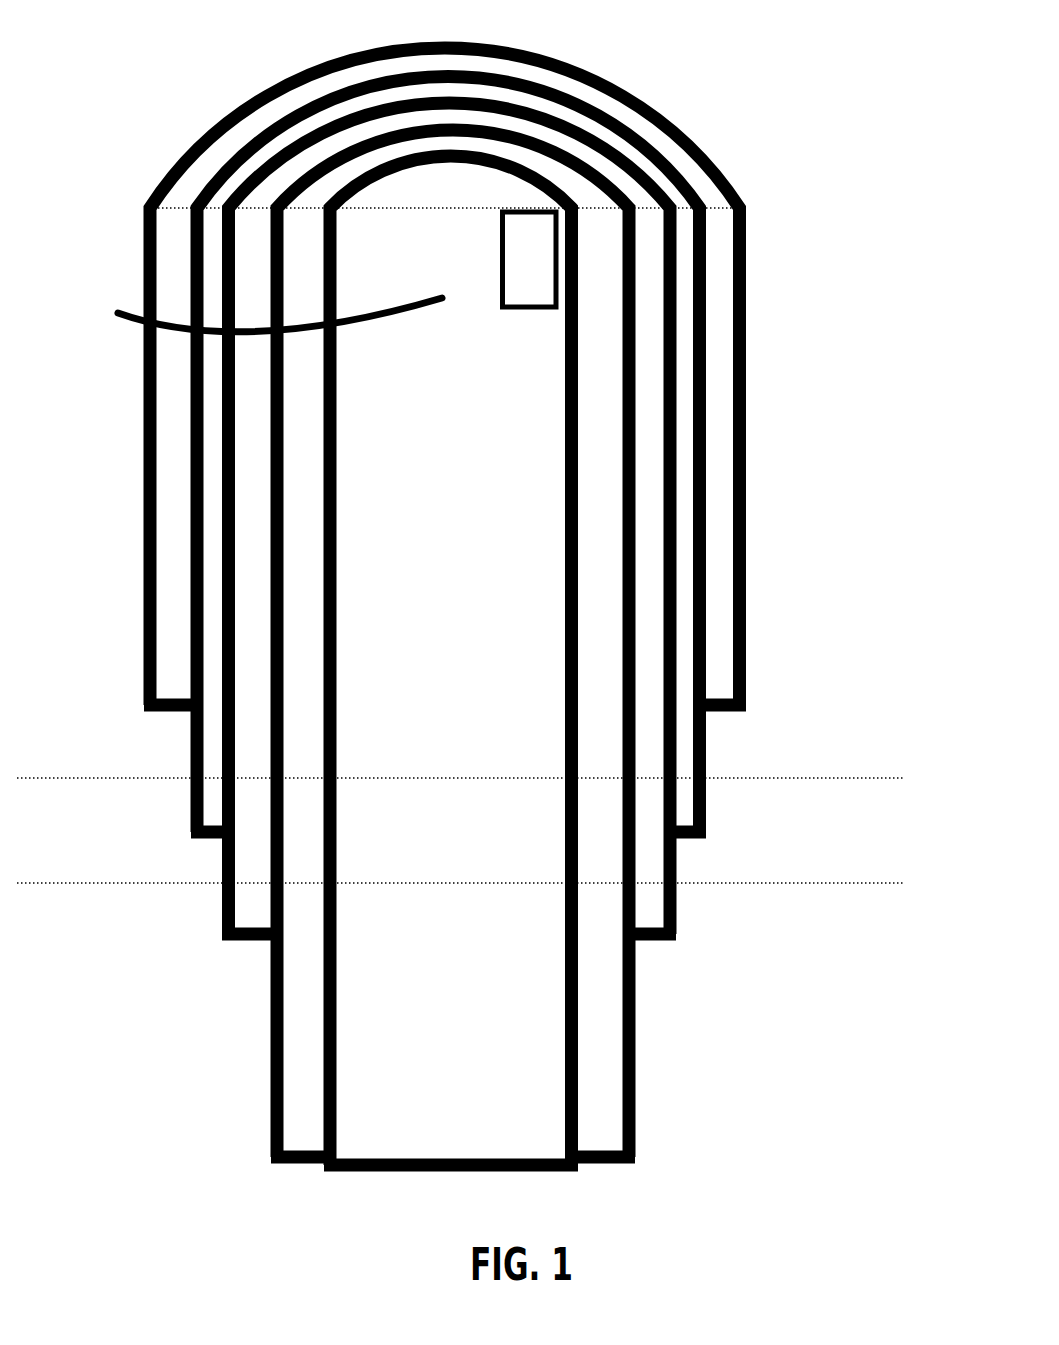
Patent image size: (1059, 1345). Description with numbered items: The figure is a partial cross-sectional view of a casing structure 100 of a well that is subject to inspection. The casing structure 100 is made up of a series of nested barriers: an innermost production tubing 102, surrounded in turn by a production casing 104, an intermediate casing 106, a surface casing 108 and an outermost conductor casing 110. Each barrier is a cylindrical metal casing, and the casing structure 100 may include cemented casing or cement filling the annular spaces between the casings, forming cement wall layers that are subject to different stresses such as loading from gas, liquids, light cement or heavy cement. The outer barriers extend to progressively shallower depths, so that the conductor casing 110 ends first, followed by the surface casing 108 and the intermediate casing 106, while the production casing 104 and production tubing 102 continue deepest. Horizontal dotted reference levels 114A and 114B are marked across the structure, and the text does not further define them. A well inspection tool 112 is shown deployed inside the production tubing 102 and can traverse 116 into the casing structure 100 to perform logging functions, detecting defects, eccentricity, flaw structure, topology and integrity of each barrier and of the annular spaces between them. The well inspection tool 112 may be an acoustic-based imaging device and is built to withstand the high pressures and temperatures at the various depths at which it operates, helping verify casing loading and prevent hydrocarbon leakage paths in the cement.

The casing structure 100 is at (783, 30).
The production tubing 102 is at (580, 441).
The production casing 104 is at (635, 521).
The intermediate casing 106 is at (678, 605).
The surface casing 108 is at (709, 663).
The conductor casing 110 is at (749, 701).
The well inspection tool 112 is at (383, 281).
The first reference plane 114A is at (907, 772).
The second reference plane 114B is at (905, 874).
The traverse 116 is at (258, 312).